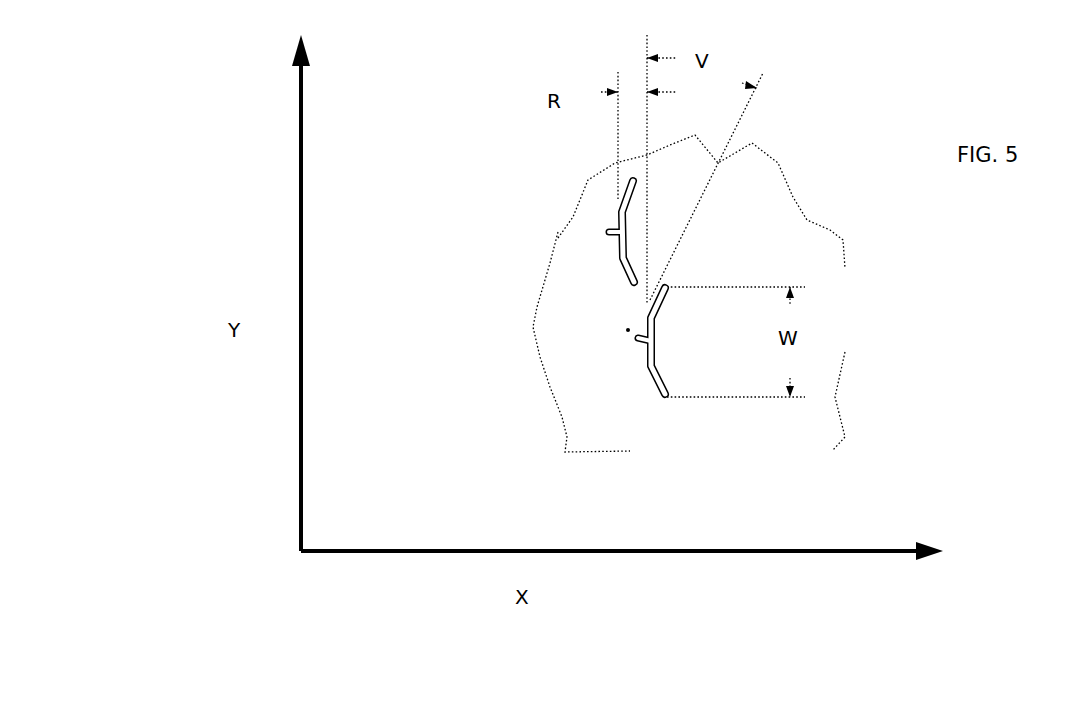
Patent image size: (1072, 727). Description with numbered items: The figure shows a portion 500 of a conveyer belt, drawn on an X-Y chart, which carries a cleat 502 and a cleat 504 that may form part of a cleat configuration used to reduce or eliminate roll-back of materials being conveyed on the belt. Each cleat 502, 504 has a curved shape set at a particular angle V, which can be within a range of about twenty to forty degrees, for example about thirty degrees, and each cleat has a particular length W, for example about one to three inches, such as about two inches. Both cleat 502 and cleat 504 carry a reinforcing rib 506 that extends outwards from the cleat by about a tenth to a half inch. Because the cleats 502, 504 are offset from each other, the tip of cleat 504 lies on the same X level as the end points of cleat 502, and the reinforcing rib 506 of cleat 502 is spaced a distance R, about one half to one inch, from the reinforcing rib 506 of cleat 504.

The portion of belt 500 is at (798, 92).
The cleat 502 is at (599, 202).
The cleat 504 is at (618, 389).
The reinforcing rib 506 is at (627, 329).